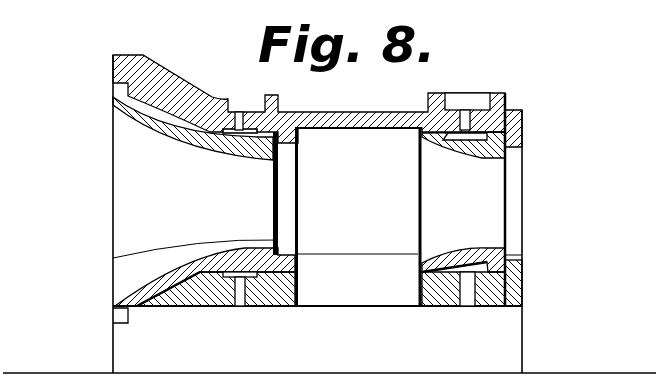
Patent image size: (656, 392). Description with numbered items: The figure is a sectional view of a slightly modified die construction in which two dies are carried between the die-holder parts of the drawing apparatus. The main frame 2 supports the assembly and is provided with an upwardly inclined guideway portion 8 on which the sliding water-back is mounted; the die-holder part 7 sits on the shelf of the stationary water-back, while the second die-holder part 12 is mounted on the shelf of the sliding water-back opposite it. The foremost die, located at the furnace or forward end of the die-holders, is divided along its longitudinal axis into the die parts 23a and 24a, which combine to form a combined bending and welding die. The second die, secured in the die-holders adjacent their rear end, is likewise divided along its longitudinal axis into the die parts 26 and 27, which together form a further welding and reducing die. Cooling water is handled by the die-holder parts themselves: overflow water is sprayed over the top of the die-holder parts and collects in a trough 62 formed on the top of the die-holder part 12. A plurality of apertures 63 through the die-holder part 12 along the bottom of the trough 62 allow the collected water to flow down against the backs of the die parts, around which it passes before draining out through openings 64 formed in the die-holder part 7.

The main frame 2 is at (30, 373).
The die-holder part 7 is at (268, 300).
The upwardly inclined guideway portion 8 is at (512, 347).
The second die-holder part 12 is at (128, 70).
The foremost die part 23a is at (202, 262).
The foremost die part 24a is at (192, 138).
The rear die part 26 is at (465, 248).
The rear die part 27 is at (480, 152).
The trough 62 is at (250, 110).
The apertures 63 is at (238, 115).
The openings 64 is at (240, 295).